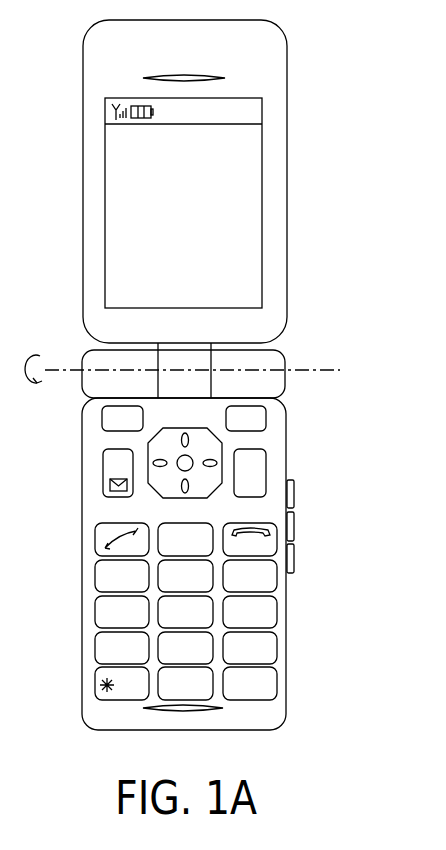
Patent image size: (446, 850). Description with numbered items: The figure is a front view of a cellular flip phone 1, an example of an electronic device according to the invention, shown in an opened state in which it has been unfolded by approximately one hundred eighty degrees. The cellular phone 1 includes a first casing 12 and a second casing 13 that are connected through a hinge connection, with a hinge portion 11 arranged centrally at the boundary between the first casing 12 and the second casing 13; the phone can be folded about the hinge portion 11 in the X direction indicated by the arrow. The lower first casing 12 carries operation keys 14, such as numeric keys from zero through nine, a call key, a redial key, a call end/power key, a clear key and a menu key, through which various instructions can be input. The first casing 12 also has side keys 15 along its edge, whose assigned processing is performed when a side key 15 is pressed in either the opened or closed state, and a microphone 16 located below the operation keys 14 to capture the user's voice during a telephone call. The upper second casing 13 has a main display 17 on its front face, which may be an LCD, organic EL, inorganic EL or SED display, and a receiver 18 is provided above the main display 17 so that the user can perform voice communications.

The cellular phone 1 is at (183, 397).
The hinge portion 11 is at (285, 355).
The first casing 12 is at (286, 433).
The second casing 13 is at (214, 181).
The operation keys 14 is at (72, 418).
The side keys 15 is at (307, 470).
The microphone 16 is at (220, 708).
The main display 17 is at (253, 237).
The receiver 18 is at (218, 78).